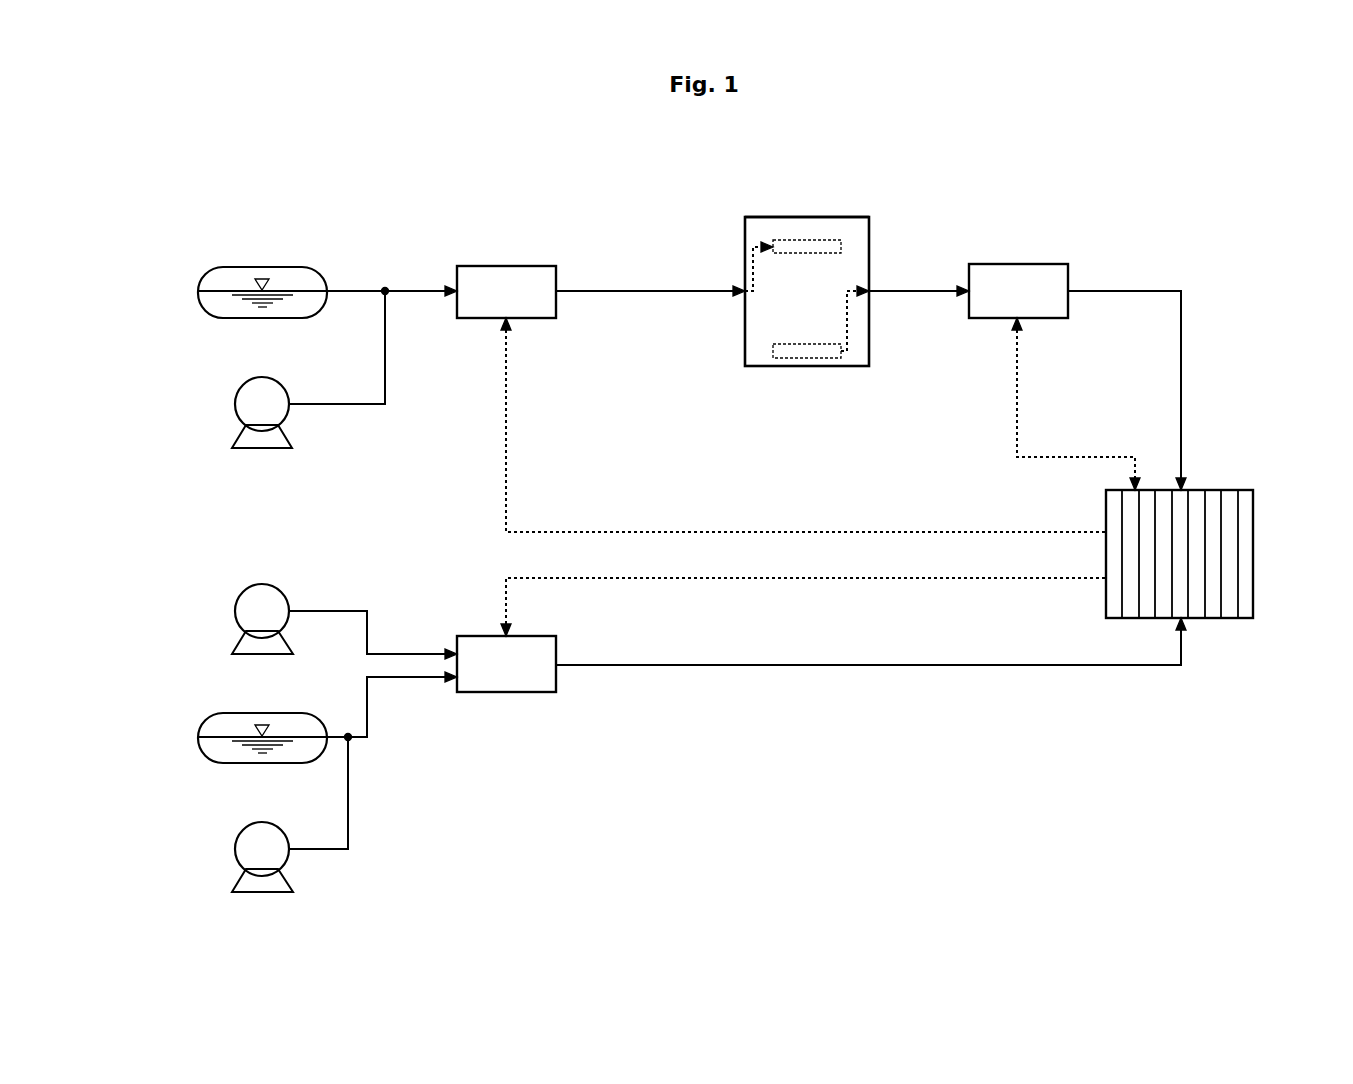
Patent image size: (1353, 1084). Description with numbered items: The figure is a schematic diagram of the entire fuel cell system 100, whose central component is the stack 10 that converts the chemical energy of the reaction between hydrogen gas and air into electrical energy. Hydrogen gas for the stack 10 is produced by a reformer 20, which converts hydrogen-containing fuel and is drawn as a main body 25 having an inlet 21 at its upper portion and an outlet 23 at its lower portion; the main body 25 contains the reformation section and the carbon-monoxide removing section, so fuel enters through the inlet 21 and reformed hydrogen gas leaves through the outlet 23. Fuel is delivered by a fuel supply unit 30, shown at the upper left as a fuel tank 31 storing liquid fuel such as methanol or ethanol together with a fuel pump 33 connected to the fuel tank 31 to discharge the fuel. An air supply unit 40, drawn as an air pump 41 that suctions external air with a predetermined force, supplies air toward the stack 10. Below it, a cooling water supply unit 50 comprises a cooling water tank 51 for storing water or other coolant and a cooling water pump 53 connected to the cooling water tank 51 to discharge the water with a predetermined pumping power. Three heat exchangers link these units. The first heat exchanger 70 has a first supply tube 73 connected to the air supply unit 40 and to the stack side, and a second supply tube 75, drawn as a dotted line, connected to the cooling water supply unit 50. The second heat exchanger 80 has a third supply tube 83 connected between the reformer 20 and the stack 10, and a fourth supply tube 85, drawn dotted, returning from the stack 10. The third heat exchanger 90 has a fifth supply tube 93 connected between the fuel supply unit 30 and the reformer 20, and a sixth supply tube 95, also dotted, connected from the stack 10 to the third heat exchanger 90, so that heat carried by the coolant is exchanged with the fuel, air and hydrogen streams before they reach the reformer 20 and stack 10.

The fuel cell system 100 is at (647, 162).
The stack 10 is at (1253, 557).
The reformer 20 is at (886, 240).
The inlet 21 is at (818, 240).
The outlet 23 is at (793, 358).
The main body 25 is at (790, 217).
The fuel supply unit 30 is at (148, 293).
The fuel tank 31 is at (198, 291).
The fuel pump 33 is at (237, 404).
The air supply unit 40 is at (200, 599).
The air pump 41 is at (237, 617).
The cooling water supply unit 50 is at (148, 740).
The cooling water tank 51 is at (198, 737).
The cooling water pump 53 is at (237, 849).
The first heat exchanger 70 is at (577, 632).
The first supply tube 73 is at (416, 654).
The second supply tube 75 is at (932, 578).
The second heat exchanger 80 is at (969, 350).
The third supply tube 83 is at (918, 291).
The fourth supply tube 85 is at (1022, 422).
The third heat exchanger 90 is at (549, 348).
The fifth supply tube 93 is at (430, 291).
The sixth supply tube 95 is at (506, 477).